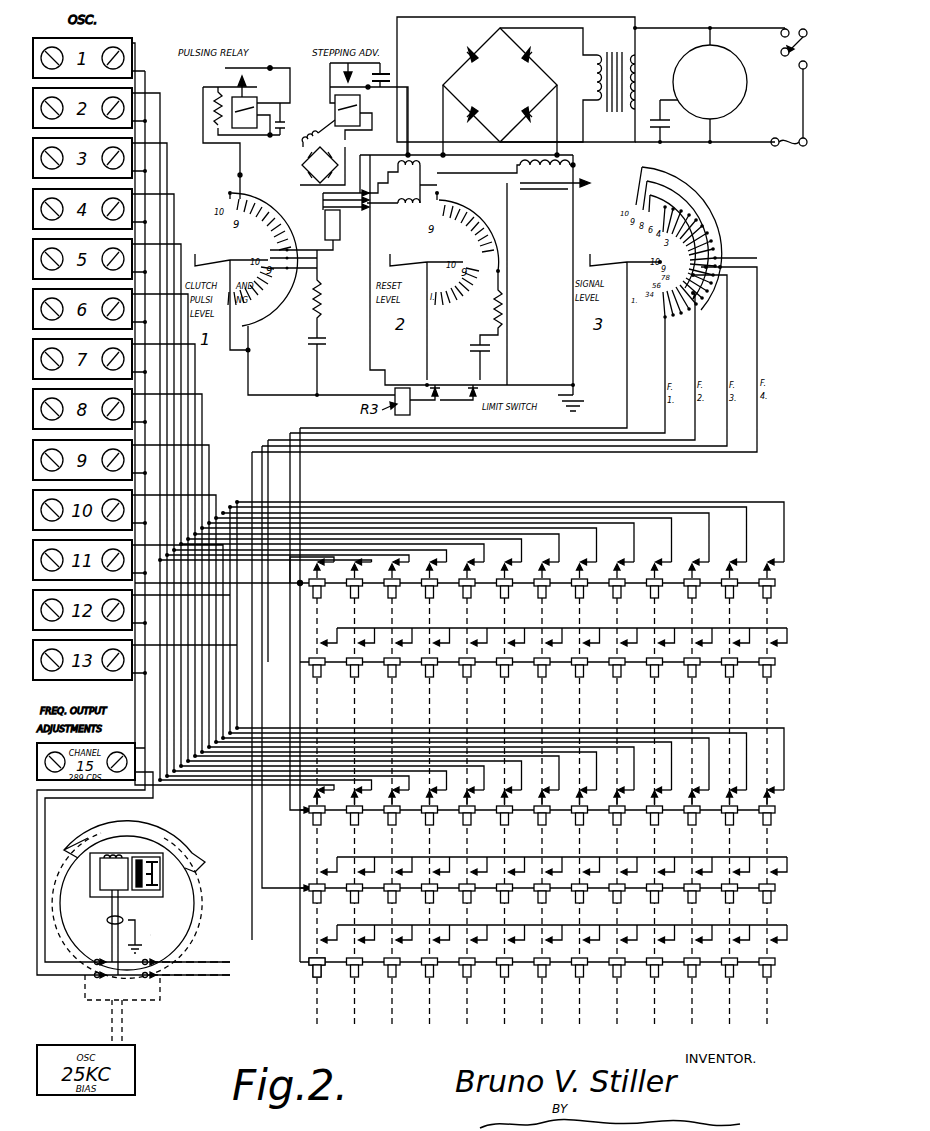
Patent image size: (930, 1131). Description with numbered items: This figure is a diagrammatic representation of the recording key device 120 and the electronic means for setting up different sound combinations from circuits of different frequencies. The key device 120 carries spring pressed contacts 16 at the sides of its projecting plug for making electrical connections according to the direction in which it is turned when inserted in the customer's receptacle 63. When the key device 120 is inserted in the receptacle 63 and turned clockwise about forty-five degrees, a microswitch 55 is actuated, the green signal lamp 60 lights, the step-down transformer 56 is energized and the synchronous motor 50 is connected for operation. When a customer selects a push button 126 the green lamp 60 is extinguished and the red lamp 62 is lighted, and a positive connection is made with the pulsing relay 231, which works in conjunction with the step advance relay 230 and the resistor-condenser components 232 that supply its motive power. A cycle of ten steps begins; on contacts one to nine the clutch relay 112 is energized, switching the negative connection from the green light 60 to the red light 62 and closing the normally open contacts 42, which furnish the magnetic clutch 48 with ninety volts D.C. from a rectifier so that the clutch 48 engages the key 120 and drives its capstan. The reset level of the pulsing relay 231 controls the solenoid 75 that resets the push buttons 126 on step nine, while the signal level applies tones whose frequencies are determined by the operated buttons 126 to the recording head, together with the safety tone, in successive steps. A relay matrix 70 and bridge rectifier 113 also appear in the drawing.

The spring pressed contacts 16 is at (88, 980).
The normally open contacts 42 is at (312, 192).
The magnetic clutch 48 is at (309, 131).
The synchronous motor 50 is at (710, 82).
The microswitch 55 is at (792, 24).
The step-down transformer 56 is at (616, 73).
The green signal lamp 60 is at (398, 206).
The red lamp 62 is at (422, 165).
The customer's receptacle 63 is at (190, 895).
The relay matrix 70 is at (520, 1022).
The solenoid 75 is at (578, 170).
The clutch relay 112 is at (338, 242).
The bridge rectifier 113 is at (466, 65).
The recording and reproducing key device 120 is at (152, 945).
The push buttons 126 is at (300, 975).
The step advance relay 230 is at (383, 64).
The pulsing relay 231 is at (276, 64).
The resistor-condenser components 232 is at (216, 126).